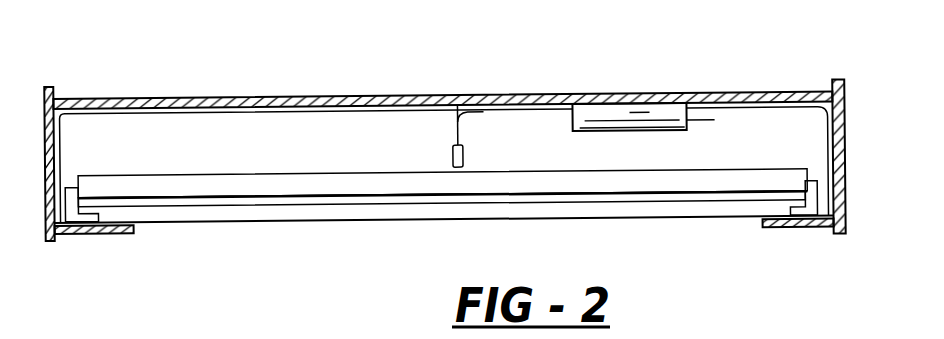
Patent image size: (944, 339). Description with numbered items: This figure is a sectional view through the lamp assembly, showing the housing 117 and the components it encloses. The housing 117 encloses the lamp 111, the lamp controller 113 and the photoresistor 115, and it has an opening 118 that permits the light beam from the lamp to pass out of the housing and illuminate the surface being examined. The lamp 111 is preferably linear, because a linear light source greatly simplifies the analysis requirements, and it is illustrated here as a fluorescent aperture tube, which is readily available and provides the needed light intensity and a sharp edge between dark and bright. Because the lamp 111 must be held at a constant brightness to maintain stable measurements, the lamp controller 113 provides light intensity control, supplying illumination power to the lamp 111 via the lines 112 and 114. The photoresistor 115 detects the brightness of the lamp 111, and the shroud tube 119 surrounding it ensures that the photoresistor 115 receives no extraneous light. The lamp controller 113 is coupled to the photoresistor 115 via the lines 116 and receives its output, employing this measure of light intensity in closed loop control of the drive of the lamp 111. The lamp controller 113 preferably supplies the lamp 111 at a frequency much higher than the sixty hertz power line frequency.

The lamp 111 is at (291, 176).
The line 112 is at (566, 104).
The lamp controller 113 is at (677, 138).
The line 114 is at (762, 100).
The photoresistor 115 is at (466, 142).
The lines 116 is at (490, 115).
The housing 117 is at (175, 100).
The opening 118 is at (252, 224).
The shroud tube 119 is at (453, 149).